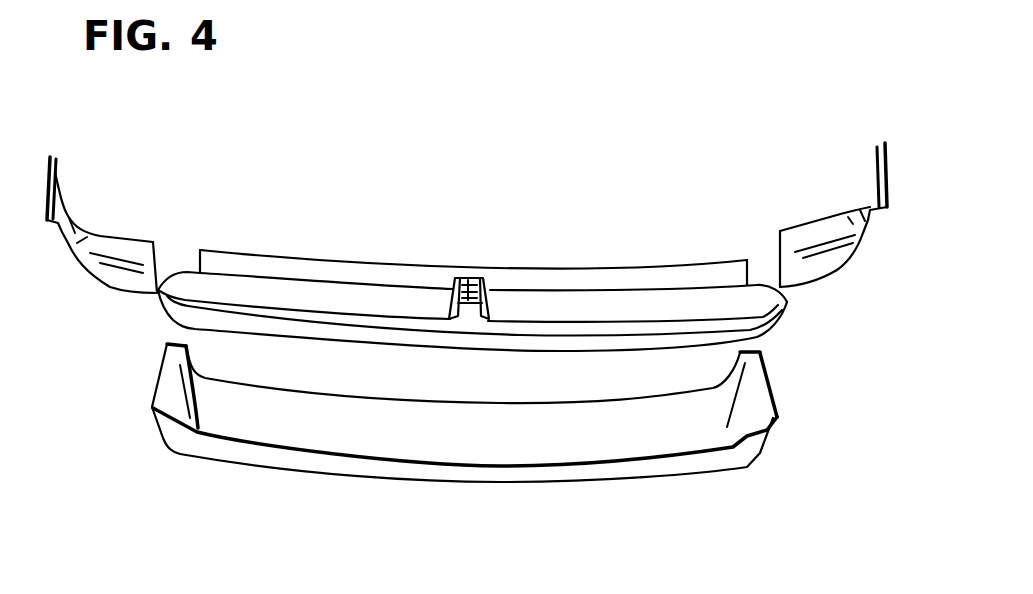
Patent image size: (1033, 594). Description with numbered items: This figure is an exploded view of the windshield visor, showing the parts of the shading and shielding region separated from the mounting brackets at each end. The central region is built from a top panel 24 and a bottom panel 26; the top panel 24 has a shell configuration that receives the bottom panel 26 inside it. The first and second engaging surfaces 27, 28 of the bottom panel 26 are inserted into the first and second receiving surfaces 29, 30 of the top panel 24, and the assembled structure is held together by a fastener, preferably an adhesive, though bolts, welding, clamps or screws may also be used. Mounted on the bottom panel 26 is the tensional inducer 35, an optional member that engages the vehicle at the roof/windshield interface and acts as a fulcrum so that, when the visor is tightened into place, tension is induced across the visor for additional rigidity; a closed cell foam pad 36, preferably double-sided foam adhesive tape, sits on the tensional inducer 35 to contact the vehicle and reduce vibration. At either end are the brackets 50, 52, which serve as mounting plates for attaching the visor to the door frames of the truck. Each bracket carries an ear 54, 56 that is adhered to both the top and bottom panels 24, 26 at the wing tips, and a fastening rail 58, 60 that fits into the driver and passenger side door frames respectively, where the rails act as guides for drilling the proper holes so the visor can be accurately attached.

The top panel 24 is at (690, 465).
The bottom panel 26 is at (618, 307).
The first engaging surface 27 is at (690, 337).
The second engaging surface 28 is at (346, 238).
The first receiving surface 29 is at (196, 422).
The second receiving surface 30 is at (463, 376).
The tensional inducer 35 is at (487, 275).
The closed cell foam pad 36 is at (463, 274).
The bracket 50 is at (120, 237).
The bracket 52 is at (819, 232).
The ear 54 is at (130, 280).
The ear 56 is at (815, 267).
The fastening rail 58 is at (53, 153).
The fastening rail 60 is at (880, 143).